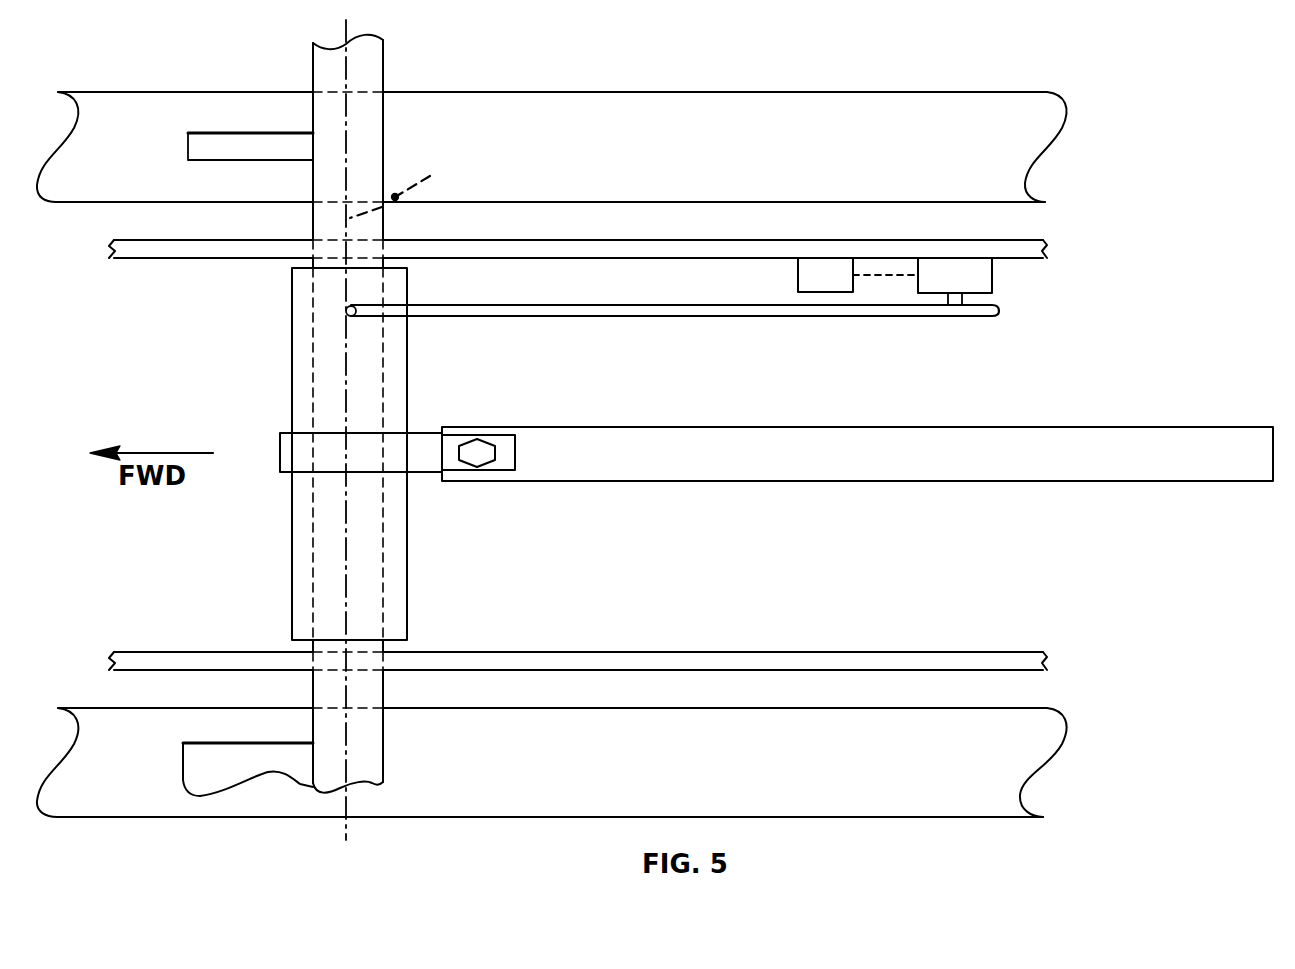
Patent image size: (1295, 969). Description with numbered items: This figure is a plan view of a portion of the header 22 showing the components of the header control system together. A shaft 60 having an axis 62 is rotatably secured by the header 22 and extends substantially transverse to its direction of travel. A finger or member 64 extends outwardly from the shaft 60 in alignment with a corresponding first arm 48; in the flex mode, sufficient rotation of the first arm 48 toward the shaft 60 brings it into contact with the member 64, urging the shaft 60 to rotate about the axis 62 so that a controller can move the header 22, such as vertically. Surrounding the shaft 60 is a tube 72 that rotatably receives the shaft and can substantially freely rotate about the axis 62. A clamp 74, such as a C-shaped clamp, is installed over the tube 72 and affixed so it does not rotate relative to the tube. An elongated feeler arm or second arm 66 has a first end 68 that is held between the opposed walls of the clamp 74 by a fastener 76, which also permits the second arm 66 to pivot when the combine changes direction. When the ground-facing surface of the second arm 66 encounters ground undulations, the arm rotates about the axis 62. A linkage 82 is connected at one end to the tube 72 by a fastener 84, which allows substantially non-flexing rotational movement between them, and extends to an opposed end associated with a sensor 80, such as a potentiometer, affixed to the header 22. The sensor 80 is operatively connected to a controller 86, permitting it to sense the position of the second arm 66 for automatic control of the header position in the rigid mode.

The header 22 is at (594, 240).
The first arm 48 is at (908, 163).
The shaft 60 is at (385, 62).
The axis 62 is at (409, 181).
The member 64 is at (258, 133).
The second arm 66 is at (728, 482).
The first end 68 is at (440, 432).
The tube 72 is at (292, 333).
The clamp 74 is at (343, 477).
The fastener 76 is at (487, 444).
The sensor 80 is at (993, 280).
The linkage 82 is at (902, 333).
The fastener 84 is at (356, 305).
The controller 86 is at (846, 290).